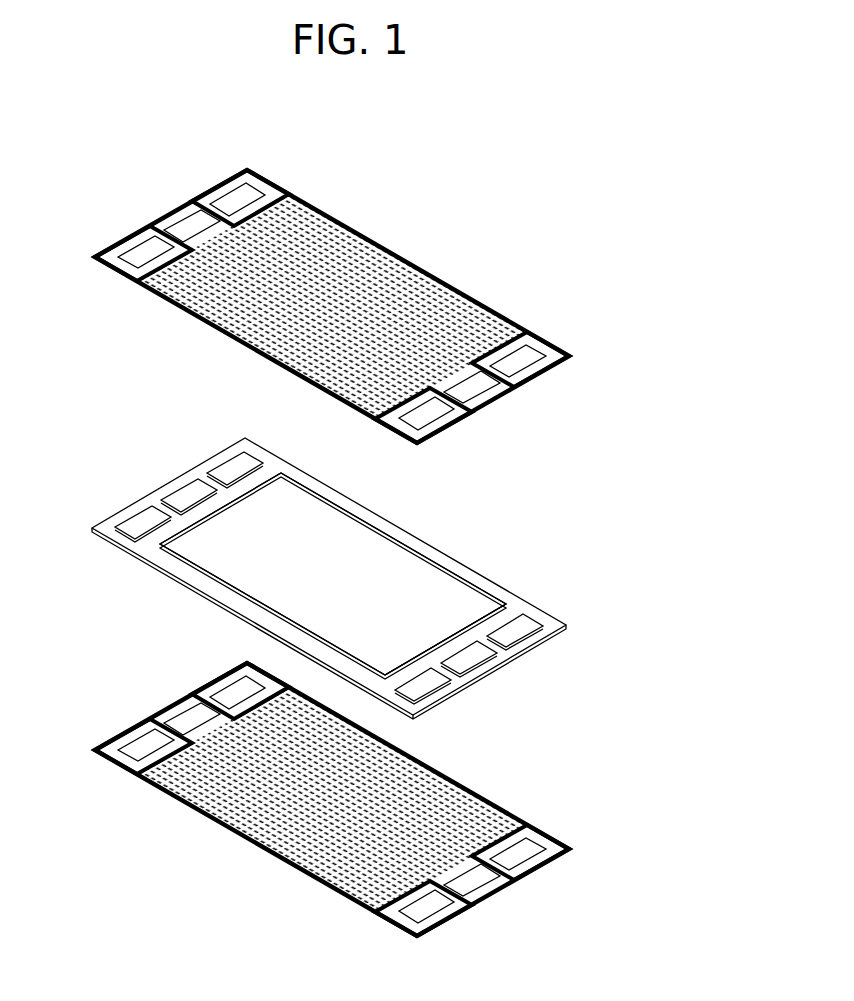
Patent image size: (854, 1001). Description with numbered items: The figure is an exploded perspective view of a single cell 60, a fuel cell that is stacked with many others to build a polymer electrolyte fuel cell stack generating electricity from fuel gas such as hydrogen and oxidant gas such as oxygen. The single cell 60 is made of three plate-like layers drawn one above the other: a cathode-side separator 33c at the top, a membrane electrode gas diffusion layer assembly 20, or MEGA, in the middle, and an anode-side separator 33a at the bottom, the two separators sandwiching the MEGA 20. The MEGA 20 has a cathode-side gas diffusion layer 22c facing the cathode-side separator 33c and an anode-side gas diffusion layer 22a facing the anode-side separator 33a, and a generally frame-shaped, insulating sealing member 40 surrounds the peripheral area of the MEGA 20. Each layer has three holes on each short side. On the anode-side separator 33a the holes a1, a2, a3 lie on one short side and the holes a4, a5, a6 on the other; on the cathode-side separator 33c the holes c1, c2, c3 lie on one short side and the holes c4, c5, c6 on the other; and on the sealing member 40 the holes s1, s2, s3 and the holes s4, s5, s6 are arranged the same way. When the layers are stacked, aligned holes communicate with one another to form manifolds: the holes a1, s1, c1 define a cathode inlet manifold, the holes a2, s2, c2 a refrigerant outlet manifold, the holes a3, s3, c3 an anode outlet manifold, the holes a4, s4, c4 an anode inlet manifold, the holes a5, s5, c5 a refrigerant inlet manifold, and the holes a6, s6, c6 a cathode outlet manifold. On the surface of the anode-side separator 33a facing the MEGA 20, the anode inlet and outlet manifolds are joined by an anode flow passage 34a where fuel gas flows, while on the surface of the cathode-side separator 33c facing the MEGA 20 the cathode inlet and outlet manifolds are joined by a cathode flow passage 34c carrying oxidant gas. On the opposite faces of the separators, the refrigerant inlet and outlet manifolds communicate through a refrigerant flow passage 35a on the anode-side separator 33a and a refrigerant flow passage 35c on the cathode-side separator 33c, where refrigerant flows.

The single cell 60 is at (629, 310).
The cathode-side separator 33c is at (329, 301).
The cathode flow passage 34c is at (160, 298).
The refrigerant flow passage 35c is at (320, 235).
The hole c1 is at (238, 197).
The hole c2 is at (188, 223).
The hole c3 is at (142, 252).
The hole c4 is at (527, 360).
The hole c5 is at (480, 387).
The hole c6 is at (433, 417).
The sealing member 40 is at (373, 576).
The membrane electrode gas diffusion layer assembly 20 is at (321, 577).
The cathode-side gas diffusion layer 22c is at (207, 538).
The anode-side gas diffusion layer 22a is at (417, 628).
The hole s1 is at (240, 465).
The hole s2 is at (190, 497).
The hole s3 is at (143, 523).
The hole s4 is at (523, 630).
The hole s5 is at (475, 658).
The hole s6 is at (428, 690).
The anode-side separator 33a is at (329, 796).
The anode flow passage 34a is at (332, 799).
The refrigerant flow passage 35a is at (332, 808).
The hole a1 is at (236, 676).
The hole a2 is at (177, 697).
The hole a3 is at (139, 731).
The hole a4 is at (532, 866).
The hole a5 is at (494, 899).
The hole a6 is at (436, 921).